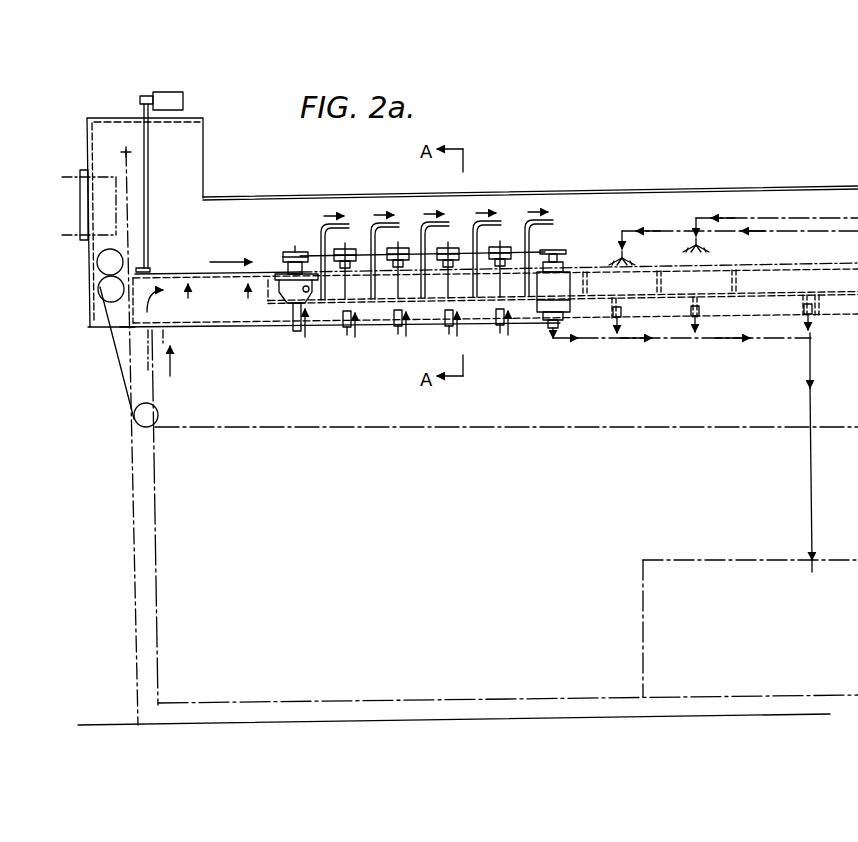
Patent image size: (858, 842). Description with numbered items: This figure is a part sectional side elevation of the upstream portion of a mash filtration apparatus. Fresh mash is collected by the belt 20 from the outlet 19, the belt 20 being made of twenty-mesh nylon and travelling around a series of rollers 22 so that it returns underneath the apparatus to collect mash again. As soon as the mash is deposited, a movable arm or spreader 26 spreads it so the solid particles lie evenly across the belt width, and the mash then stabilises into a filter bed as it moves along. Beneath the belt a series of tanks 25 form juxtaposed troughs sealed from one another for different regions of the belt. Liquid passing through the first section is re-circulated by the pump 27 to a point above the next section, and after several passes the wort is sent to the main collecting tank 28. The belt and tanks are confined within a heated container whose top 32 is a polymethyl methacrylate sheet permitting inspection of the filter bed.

The outlet 19 is at (67, 186).
The belt 20 is at (186, 272).
The rollers 22 is at (93, 286).
The tanks 25 is at (600, 298).
The movable arm or spreader 26 is at (186, 100).
The pump 27 is at (300, 292).
The main collecting tank 28 is at (643, 619).
The top of the container 32 is at (556, 193).